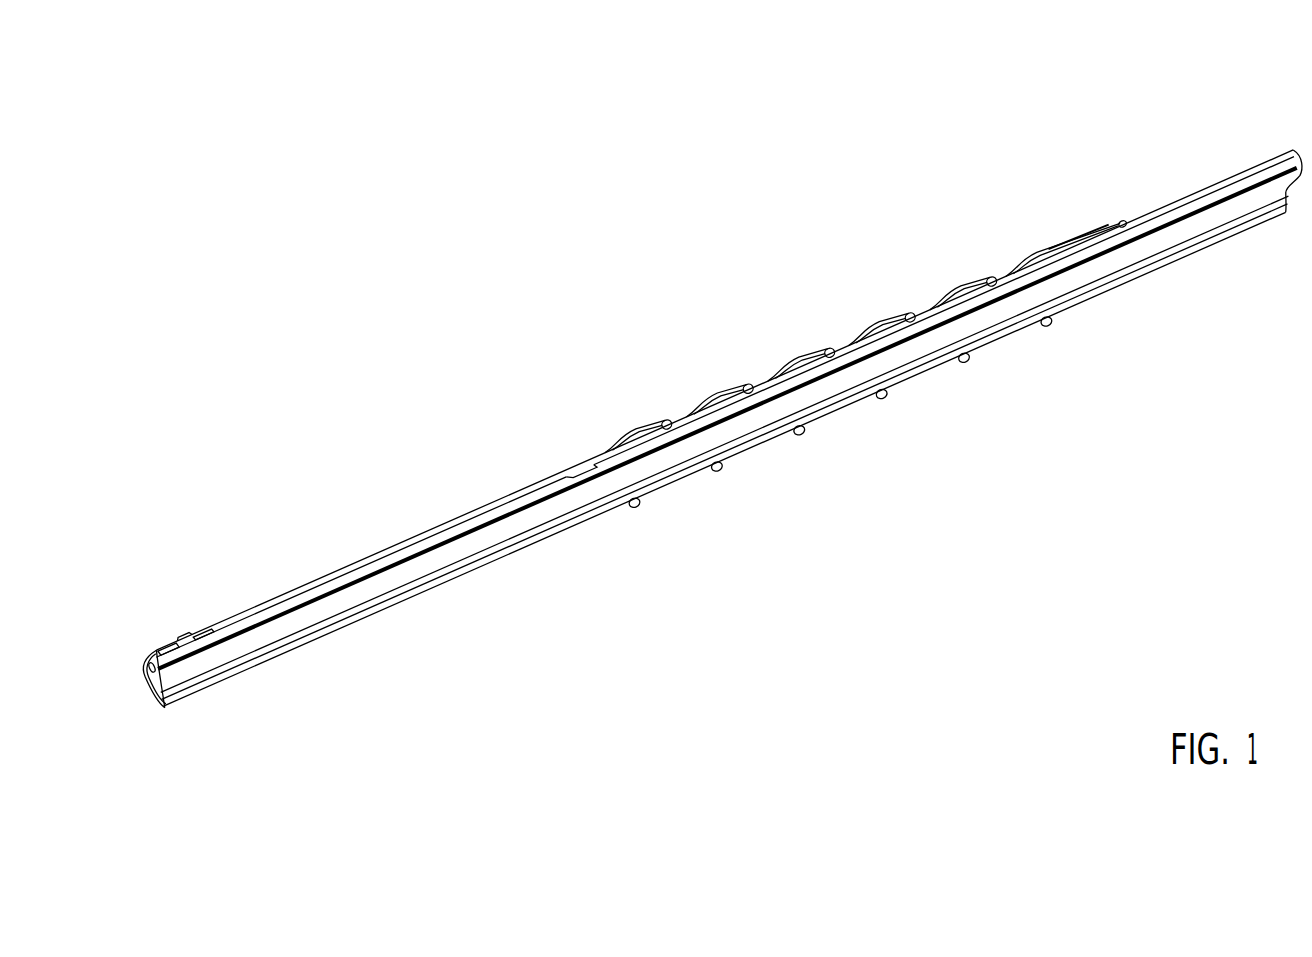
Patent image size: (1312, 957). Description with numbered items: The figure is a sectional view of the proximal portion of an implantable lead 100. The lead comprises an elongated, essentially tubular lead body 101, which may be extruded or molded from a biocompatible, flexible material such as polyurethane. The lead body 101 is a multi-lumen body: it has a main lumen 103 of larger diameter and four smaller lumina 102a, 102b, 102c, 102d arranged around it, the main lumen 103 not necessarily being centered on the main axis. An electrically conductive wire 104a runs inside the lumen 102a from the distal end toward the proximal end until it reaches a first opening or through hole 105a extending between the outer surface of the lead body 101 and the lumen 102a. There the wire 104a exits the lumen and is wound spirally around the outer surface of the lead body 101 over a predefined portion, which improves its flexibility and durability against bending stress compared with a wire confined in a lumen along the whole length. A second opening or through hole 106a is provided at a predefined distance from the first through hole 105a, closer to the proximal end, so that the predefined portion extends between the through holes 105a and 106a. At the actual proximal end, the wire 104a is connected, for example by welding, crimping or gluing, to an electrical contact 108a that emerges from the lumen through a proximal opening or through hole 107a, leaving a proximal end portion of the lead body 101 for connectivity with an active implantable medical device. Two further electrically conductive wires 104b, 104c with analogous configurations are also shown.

The implantable lead 100 is at (1084, 491).
The lead body 101 is at (385, 612).
The lumen 102a is at (150, 655).
The lumen 102b is at (144, 669).
The lumen 102c is at (148, 688).
The lumen 102d is at (161, 712).
The main lumen 103 is at (240, 652).
The electrically conductive wire 104a is at (428, 552).
The electrically conductive wire 104b is at (708, 395).
The electrically conductive wire 104c is at (632, 432).
The first opening or through hole 105a is at (1110, 222).
The second opening or through hole 106a is at (570, 460).
The proximal opening or through hole 107a is at (198, 627).
The electrical contact 108a is at (172, 650).